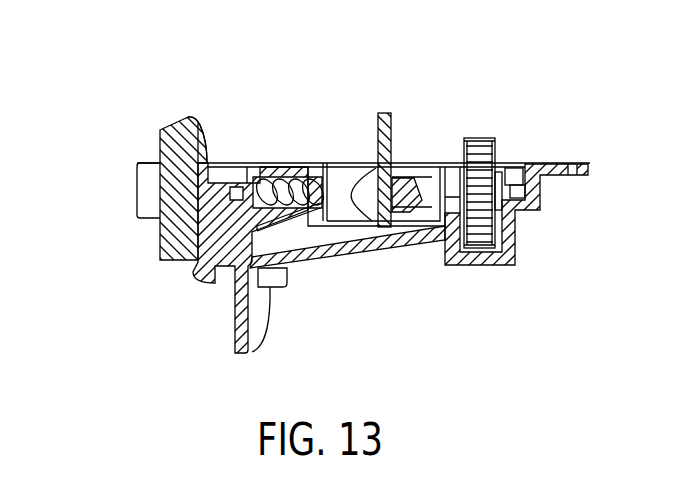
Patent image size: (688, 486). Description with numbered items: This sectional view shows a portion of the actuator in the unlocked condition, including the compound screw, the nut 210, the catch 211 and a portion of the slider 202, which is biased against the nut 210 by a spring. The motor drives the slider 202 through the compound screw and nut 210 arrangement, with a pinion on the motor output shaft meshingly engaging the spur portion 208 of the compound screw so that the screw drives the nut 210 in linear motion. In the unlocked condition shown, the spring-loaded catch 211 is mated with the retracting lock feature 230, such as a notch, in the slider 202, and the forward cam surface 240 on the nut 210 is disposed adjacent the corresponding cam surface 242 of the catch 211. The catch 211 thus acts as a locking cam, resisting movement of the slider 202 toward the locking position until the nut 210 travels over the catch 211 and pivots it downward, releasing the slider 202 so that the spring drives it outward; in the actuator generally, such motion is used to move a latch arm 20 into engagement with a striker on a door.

The latch arm 20 is at (137, 185).
The slider 202 is at (181, 128).
The spur portion 208 is at (478, 136).
The nut 210 is at (344, 177).
The catch 211 is at (292, 222).
The retracting lock feature 230 is at (187, 237).
The forward cam surface 240 is at (355, 248).
The cam surface 242 is at (318, 188).